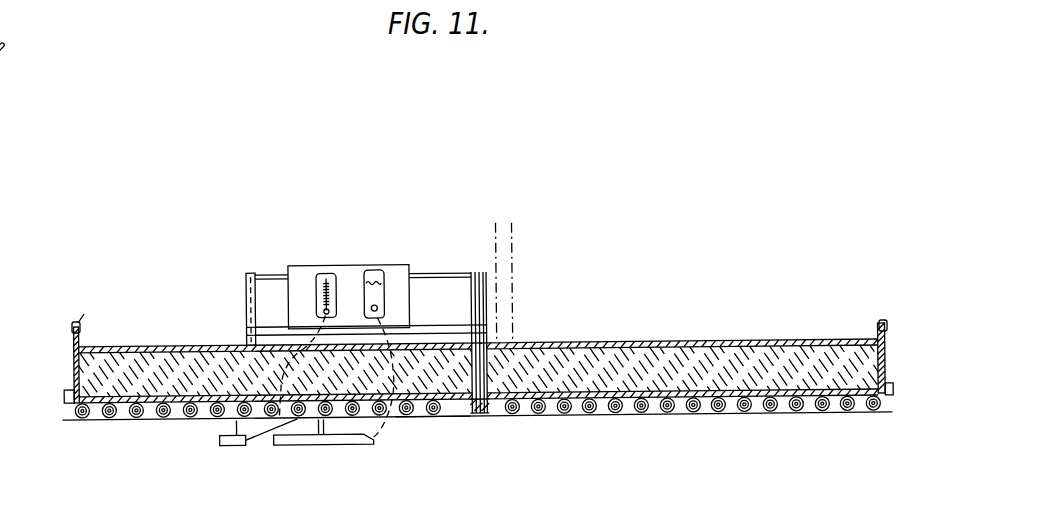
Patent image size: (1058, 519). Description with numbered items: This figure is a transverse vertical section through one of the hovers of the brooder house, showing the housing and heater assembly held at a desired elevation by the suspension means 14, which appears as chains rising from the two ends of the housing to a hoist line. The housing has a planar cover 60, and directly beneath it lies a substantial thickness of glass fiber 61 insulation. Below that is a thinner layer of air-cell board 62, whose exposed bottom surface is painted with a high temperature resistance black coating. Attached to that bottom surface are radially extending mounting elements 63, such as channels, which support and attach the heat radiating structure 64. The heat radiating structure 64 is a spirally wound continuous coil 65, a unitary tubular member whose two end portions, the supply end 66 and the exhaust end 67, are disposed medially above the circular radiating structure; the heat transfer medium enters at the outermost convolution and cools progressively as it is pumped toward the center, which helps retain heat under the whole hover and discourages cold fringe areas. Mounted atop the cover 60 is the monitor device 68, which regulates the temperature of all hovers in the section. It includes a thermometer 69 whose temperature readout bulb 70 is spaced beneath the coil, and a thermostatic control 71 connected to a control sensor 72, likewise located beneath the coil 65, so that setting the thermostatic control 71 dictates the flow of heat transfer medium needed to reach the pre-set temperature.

The suspension means 14 is at (207, 183).
The planar cover 60 is at (722, 342).
The glass fiber insulation 61 is at (654, 360).
The air-cell board 62 is at (703, 412).
The mounting elements 63 is at (479, 416).
The heat radiating structure 64 is at (432, 423).
The spirally wound continuous coil 65 is at (152, 420).
The supply end portion 66 is at (515, 246).
The exhaust end portion 67 is at (492, 232).
The monitor device 68 is at (352, 261).
The thermometer 69 is at (320, 297).
The temperature readout bulb 70 is at (236, 448).
The thermostatic control 71 is at (376, 285).
The control sensor 72 is at (330, 448).